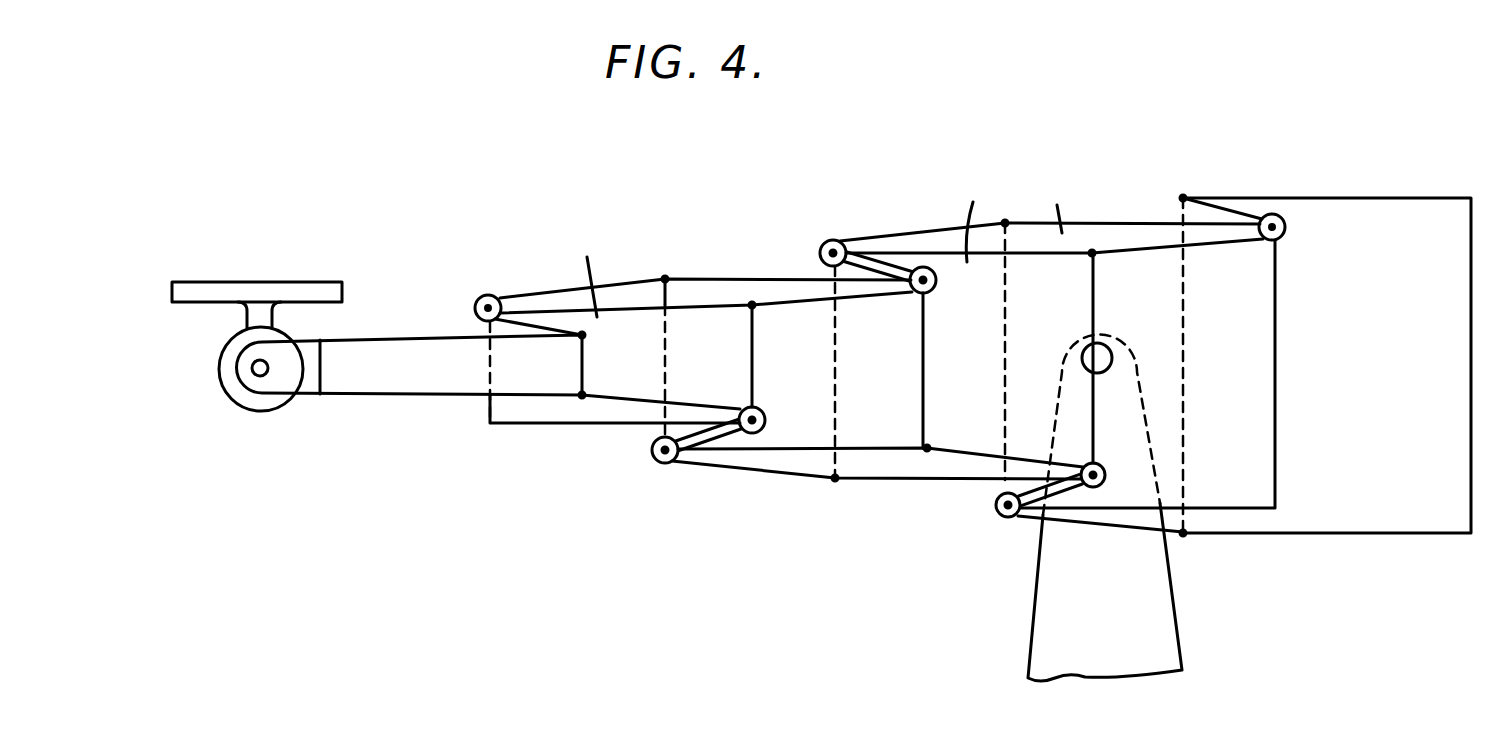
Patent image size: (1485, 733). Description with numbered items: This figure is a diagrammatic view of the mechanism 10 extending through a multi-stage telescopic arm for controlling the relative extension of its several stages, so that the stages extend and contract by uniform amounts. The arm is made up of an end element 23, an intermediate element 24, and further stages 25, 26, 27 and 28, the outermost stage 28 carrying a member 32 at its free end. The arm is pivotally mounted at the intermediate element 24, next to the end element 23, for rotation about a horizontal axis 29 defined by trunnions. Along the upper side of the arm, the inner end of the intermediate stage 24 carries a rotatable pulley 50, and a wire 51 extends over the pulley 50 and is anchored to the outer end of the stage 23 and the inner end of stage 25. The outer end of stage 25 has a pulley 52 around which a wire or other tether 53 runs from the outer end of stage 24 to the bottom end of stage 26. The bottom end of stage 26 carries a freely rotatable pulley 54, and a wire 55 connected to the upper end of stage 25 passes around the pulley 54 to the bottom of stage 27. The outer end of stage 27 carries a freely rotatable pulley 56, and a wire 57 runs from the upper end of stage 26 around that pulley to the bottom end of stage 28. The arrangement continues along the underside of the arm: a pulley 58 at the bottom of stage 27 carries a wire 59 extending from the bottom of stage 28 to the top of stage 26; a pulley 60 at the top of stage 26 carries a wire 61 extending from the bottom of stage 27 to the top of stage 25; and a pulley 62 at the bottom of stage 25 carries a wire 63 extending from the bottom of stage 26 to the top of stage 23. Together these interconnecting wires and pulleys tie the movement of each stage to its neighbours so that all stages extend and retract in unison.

The actuating mechanism 10 is at (915, 146).
The end element 23 is at (1392, 198).
The intermediate element 24 is at (1057, 199).
The stage 25 is at (968, 214).
The stage 26 is at (695, 285).
The stage 27 is at (572, 271).
The stage 28 is at (363, 350).
The horizontal axis 29 is at (1112, 360).
The rail 32 is at (223, 281).
The rotatable pulley 50 is at (1272, 214).
The wire 51 is at (1205, 248).
The pulley 52 is at (820, 250).
The tether 53 is at (866, 232).
The freely rotatable pulley 54 is at (935, 289).
The wire 55 is at (885, 260).
The freely rotatable pulley 56 is at (475, 298).
The wire 57 is at (528, 288).
The pulley 58 is at (760, 433).
The wire 59 is at (600, 398).
The pulley 60 is at (655, 458).
The wire 61 is at (690, 457).
The pulley 62 is at (1100, 488).
The wire 63 is at (952, 455).